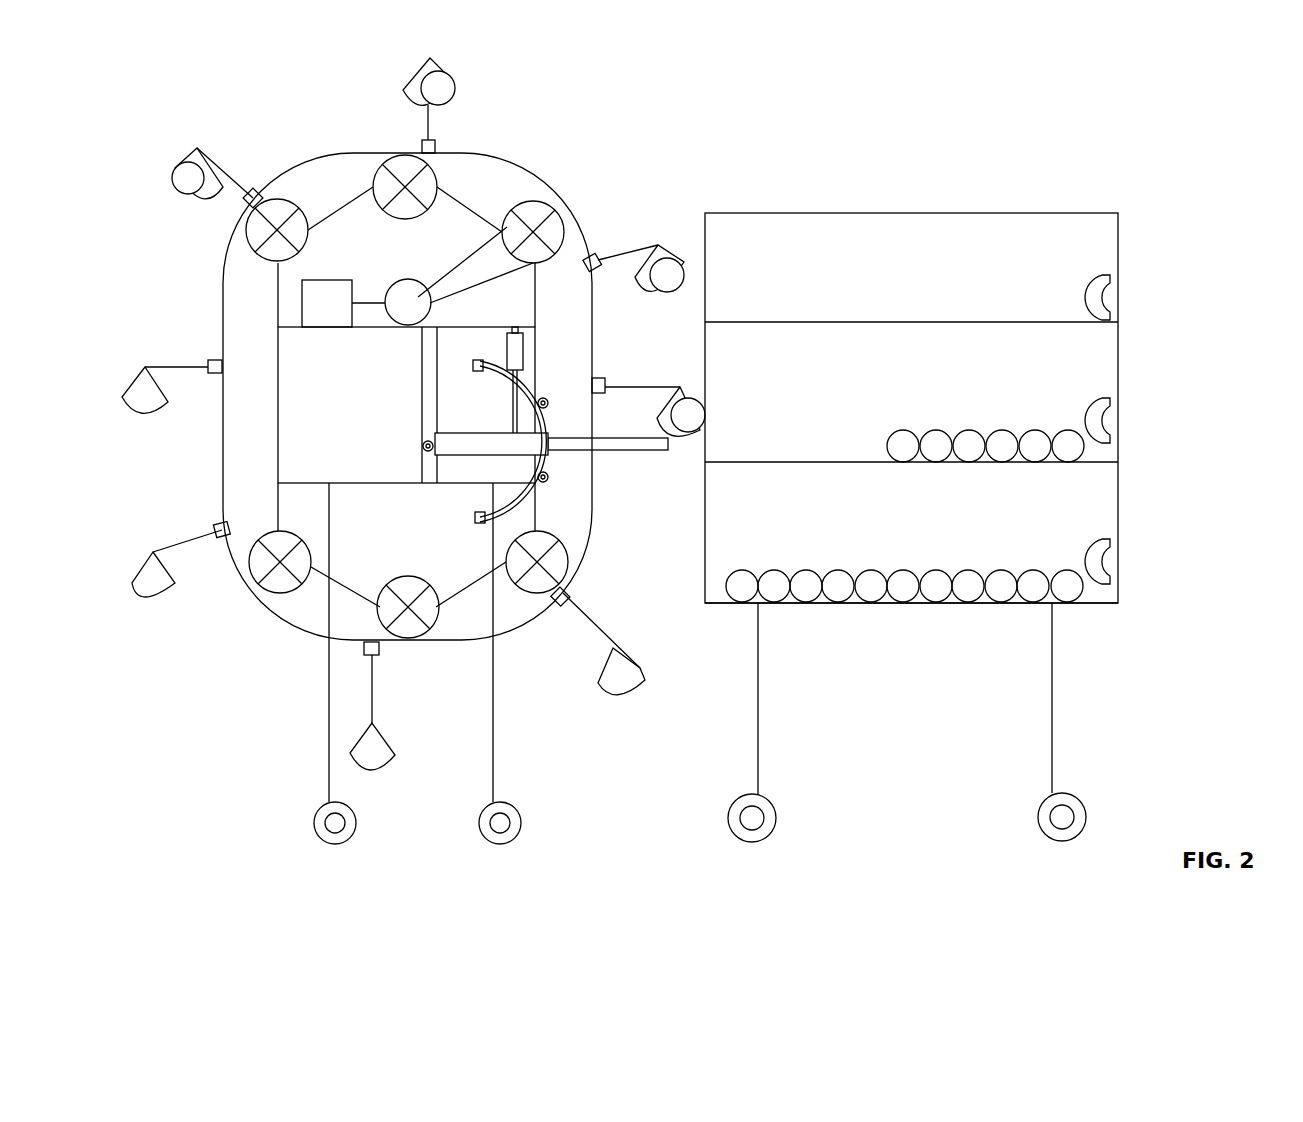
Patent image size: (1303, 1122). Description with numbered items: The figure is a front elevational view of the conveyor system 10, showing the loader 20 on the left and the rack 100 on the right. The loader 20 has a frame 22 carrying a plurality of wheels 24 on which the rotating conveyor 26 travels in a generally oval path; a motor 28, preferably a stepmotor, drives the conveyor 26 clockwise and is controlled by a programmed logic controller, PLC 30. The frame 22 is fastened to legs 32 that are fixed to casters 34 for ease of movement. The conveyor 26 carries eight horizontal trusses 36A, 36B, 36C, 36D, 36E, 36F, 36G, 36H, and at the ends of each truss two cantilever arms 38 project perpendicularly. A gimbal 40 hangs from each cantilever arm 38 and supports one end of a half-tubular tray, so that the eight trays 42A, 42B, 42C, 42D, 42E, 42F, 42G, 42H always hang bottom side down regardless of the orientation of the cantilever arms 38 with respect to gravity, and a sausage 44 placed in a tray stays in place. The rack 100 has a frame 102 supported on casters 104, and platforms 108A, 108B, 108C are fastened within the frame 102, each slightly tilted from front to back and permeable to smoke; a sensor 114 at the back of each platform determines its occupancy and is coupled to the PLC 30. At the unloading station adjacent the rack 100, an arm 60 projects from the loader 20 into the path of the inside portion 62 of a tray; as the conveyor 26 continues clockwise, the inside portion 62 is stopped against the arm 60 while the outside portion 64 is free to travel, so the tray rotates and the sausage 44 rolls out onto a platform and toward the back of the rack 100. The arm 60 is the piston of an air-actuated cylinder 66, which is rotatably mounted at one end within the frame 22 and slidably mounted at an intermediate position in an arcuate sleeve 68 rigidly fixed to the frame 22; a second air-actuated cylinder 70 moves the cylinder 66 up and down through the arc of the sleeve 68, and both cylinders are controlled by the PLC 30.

The conveyor system 10 is at (627, 112).
The loader 20 is at (312, 105).
The frame 22 is at (282, 400).
The wheels 24 is at (270, 255).
The conveyor 26 is at (167, 473).
The motor 28 is at (412, 292).
The PLC 30 is at (340, 316).
The legs 32 is at (329, 688).
The casters 34 is at (348, 826).
The truss 36A is at (213, 360).
The truss 36B is at (220, 525).
The truss 36C is at (380, 652).
The truss 36D is at (567, 592).
The truss 36E is at (602, 378).
The truss 36F is at (596, 256).
The truss 36G is at (436, 146).
The truss 36H is at (258, 190).
The cantilever arms 38 is at (430, 124).
The gimbal 40 is at (413, 75).
The half-tubular tray 42A is at (142, 413).
The half-tubular tray 42B is at (145, 597).
The half-tubular tray 42C is at (370, 770).
The half-tubular tray 42D is at (618, 695).
The half-tubular tray 42E is at (665, 440).
The half-tubular tray 42F is at (643, 290).
The half-tubular tray 42G is at (417, 100).
The half-tubular tray 42H is at (208, 195).
The sausage 44 is at (446, 88).
The arm 60 is at (588, 452).
The inside portion 62 is at (648, 293).
The outside portion 64 is at (683, 293).
The air-actuated cylinder 66 is at (465, 445).
The arcuate sleeve 68 is at (485, 513).
The second air-actuated cylinder 70 is at (510, 360).
The rack 100 is at (937, 208).
The frame 102 is at (1120, 245).
The casters 104 is at (768, 824).
The platform 108A is at (715, 600).
The platform 108B is at (752, 460).
The platform 108C is at (752, 320).
The sensor 114 is at (1112, 310).